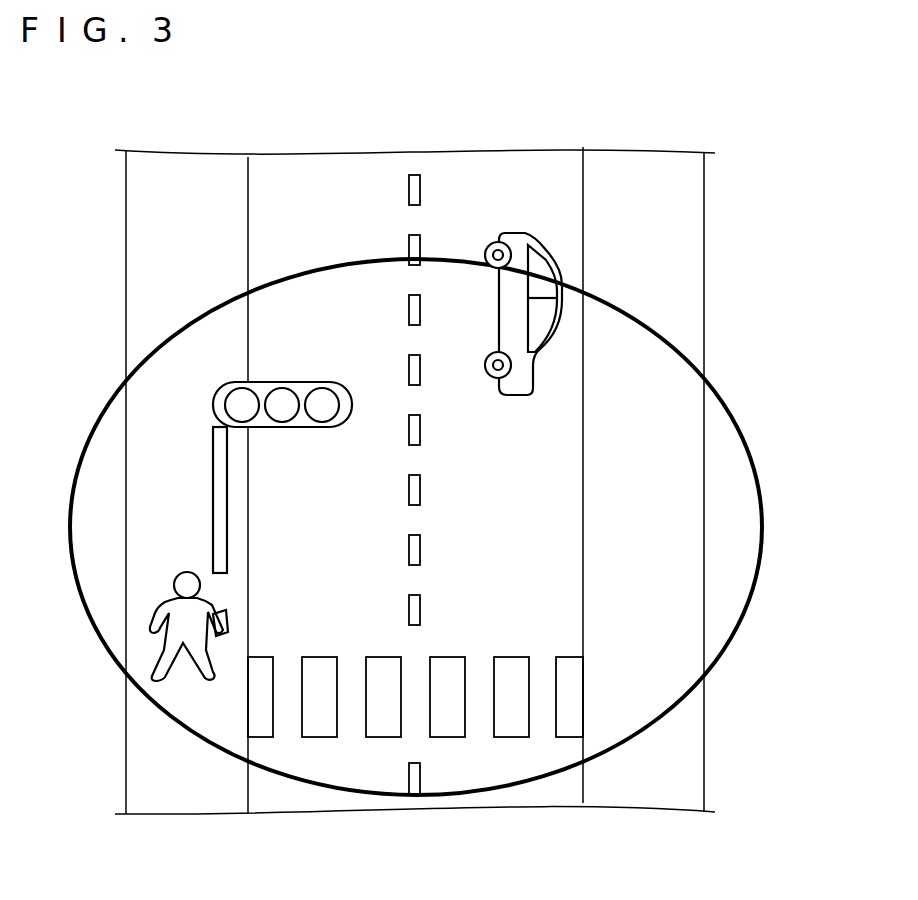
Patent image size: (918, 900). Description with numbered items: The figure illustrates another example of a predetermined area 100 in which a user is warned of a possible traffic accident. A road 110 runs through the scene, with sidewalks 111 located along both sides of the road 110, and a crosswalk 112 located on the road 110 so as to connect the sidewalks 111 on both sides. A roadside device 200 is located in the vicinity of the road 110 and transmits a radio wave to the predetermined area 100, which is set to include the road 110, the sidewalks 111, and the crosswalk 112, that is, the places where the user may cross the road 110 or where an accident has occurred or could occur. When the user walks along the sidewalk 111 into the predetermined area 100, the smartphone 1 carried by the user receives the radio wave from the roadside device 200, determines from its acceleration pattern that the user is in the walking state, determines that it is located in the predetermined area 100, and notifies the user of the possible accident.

The smartphone 1 is at (228, 619).
The predetermined area 100 is at (740, 429).
The road 110 is at (300, 811).
The sidewalks 111 is at (153, 243).
The crosswalk 112 is at (513, 712).
The roadside device 200 is at (295, 382).